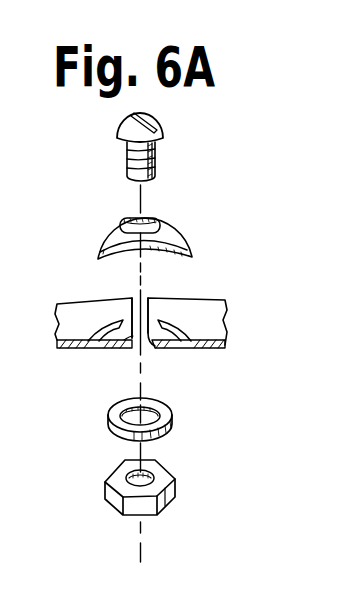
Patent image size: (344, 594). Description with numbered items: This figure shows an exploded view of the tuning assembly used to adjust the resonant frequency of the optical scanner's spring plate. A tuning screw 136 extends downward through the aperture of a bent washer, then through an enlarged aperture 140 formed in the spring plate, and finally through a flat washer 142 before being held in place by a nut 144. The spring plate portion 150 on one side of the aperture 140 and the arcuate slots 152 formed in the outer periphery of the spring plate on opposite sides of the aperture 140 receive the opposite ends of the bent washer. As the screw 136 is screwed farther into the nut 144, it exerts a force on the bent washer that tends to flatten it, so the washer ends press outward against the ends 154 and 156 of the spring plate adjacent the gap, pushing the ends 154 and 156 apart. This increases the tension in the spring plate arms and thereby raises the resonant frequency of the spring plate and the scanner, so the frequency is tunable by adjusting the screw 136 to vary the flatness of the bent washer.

The tuning screw 136 is at (153, 156).
The enlarged aperture 140 is at (160, 370).
The flat washer 142 is at (173, 425).
The nut 144 is at (169, 503).
The first clip portion 150 is at (96, 350).
The arcuate slots 152 is at (182, 350).
The end of spring plate 154 is at (122, 300).
The end of spring plate 156 is at (158, 300).